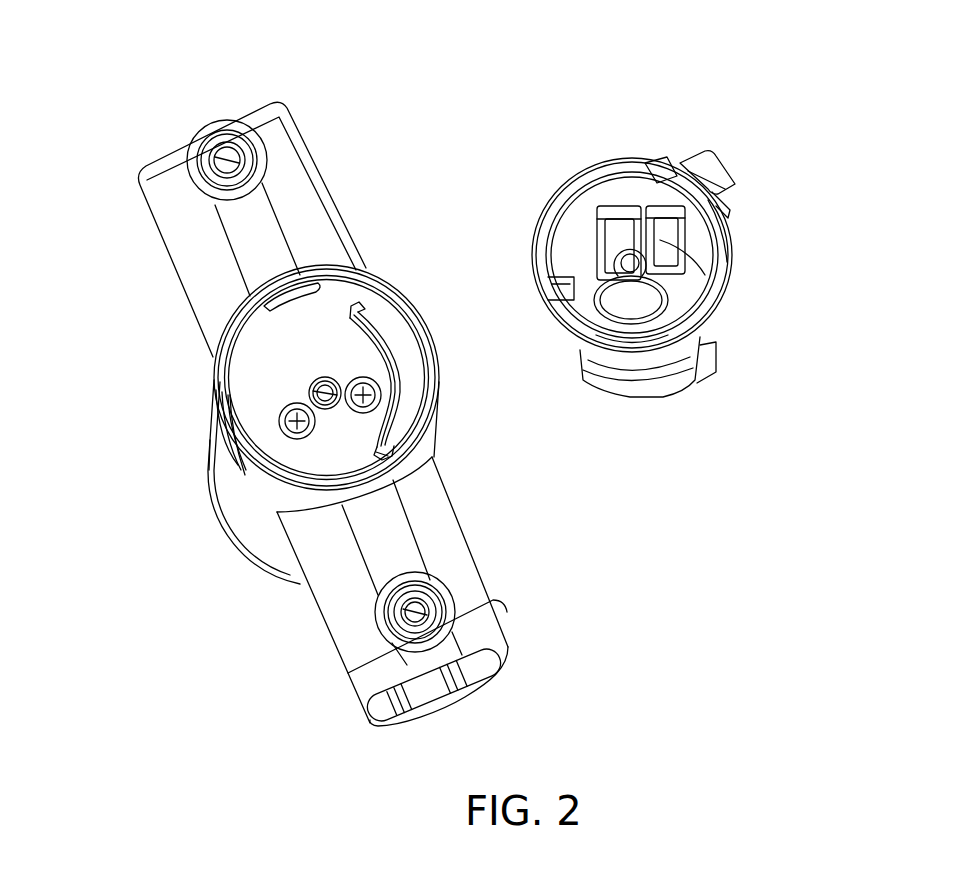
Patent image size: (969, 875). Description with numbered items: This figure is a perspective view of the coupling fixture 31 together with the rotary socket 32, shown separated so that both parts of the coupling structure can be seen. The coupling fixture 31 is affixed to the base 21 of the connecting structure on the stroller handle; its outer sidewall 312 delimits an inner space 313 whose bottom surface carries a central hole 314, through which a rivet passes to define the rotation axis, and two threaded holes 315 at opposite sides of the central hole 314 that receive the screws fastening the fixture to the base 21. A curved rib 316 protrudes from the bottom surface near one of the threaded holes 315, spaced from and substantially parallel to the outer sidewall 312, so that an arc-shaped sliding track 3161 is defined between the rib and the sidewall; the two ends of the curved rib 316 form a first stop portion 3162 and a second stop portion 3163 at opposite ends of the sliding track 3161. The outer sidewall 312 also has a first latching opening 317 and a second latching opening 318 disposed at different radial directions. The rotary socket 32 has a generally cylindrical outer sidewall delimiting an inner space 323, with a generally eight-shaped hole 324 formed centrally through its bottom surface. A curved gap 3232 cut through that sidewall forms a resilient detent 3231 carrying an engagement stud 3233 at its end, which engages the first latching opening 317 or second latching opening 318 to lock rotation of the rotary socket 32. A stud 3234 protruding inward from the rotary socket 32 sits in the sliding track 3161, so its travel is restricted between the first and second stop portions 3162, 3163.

The base 21 is at (237, 530).
The coupling fixture 31 is at (418, 303).
The outer sidewall 312 is at (420, 450).
The inner space 313 is at (263, 347).
The central hole 314 is at (309, 393).
The threaded holes 315 is at (240, 480).
The curved rib 316 is at (385, 358).
The sliding track 3161 is at (412, 390).
The first stop portion 3162 is at (393, 447).
The second stop portion 3163 is at (356, 305).
The first latching opening 317 is at (280, 283).
The second latching opening 318 is at (285, 428).
The rotary socket 32 is at (742, 334).
The inner space 323 is at (702, 257).
The detent 3231 is at (730, 215).
The curved gap 3232 is at (667, 177).
The engagement stud 3233 is at (690, 160).
The stud 3234 is at (560, 195).
The "8"-shaped hole 324 is at (648, 304).